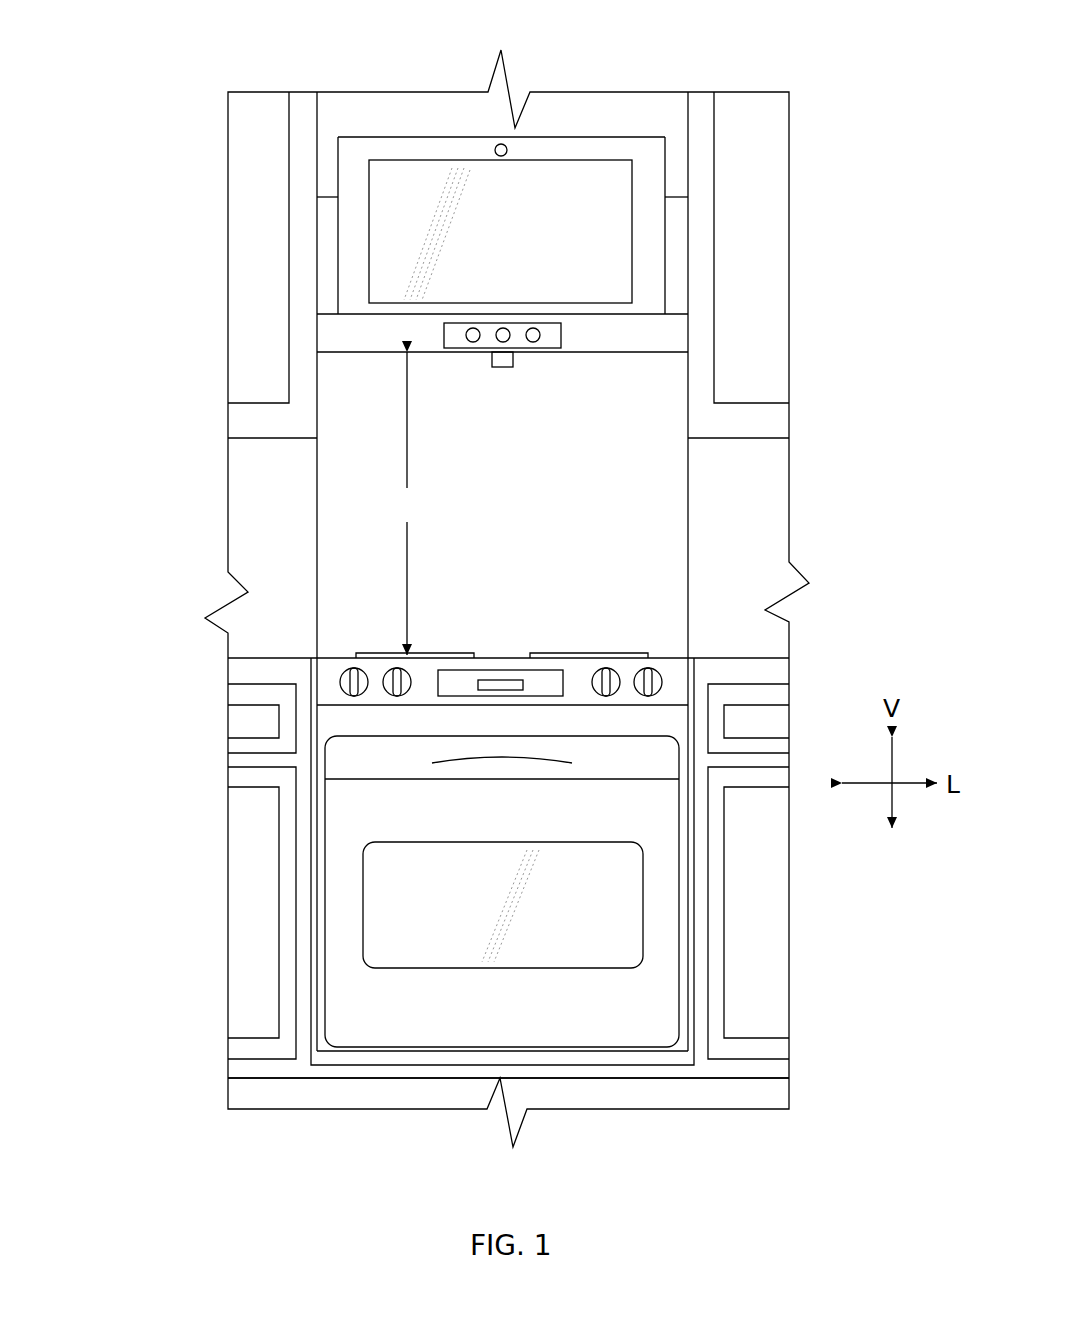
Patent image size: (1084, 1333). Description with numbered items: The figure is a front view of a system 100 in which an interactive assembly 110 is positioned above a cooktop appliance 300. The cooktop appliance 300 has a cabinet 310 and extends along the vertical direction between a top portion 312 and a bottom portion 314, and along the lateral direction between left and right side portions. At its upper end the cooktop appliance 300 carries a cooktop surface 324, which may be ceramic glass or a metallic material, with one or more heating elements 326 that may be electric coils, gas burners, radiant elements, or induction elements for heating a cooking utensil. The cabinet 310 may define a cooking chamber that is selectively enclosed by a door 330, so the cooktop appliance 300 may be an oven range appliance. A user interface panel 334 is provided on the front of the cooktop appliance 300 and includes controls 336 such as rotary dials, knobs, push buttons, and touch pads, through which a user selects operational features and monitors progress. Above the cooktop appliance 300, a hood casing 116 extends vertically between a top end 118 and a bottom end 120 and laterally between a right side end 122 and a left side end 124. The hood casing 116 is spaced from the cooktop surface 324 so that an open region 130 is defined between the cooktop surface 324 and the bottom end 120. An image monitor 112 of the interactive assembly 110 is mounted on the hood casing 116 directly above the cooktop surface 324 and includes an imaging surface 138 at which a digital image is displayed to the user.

The system 100 is at (173, 72).
The interactive assembly 110 is at (506, 220).
The image monitor 112 is at (506, 177).
The hood casing 116 is at (598, 357).
The top end 118 is at (420, 137).
The bottom end 120 is at (589, 352).
The right side end 122 is at (689, 282).
The left side end 124 is at (315, 275).
The open region 130 is at (409, 503).
The imaging surface 138 is at (380, 243).
The cooktop appliance 300 is at (507, 855).
The cabinet 310 is at (317, 1053).
The top portion 312 is at (414, 829).
The bottom portion 314 is at (400, 1058).
The cooktop surface 324 is at (462, 595).
The heating elements 326 is at (433, 657).
The door 330 is at (663, 923).
The user interface panel 334 is at (610, 647).
The controls 336 is at (662, 682).